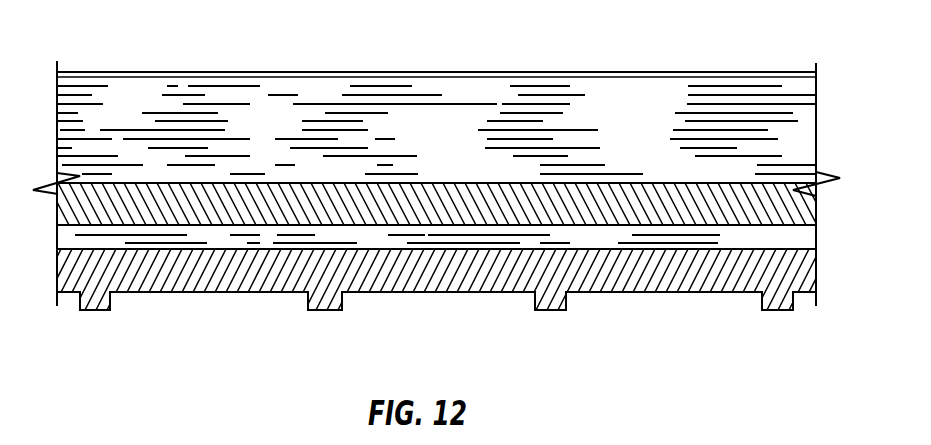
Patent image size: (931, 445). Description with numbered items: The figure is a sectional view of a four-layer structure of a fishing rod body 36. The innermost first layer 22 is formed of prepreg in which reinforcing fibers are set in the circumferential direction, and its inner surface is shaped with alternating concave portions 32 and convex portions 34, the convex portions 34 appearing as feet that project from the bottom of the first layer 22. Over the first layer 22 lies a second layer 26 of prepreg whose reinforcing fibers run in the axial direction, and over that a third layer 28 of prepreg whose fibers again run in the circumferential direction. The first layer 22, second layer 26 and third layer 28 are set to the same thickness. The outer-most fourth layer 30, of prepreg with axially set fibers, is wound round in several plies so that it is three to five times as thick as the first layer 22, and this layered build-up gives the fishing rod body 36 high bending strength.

The first layer 22 is at (527, 273).
The second layer 26 is at (550, 235).
The third layer 28 is at (648, 200).
The fourth layer 30 is at (636, 102).
The concave portions 32 is at (437, 293).
The convex portions 34 is at (323, 310).
The fishing rod body 36 is at (272, 70).